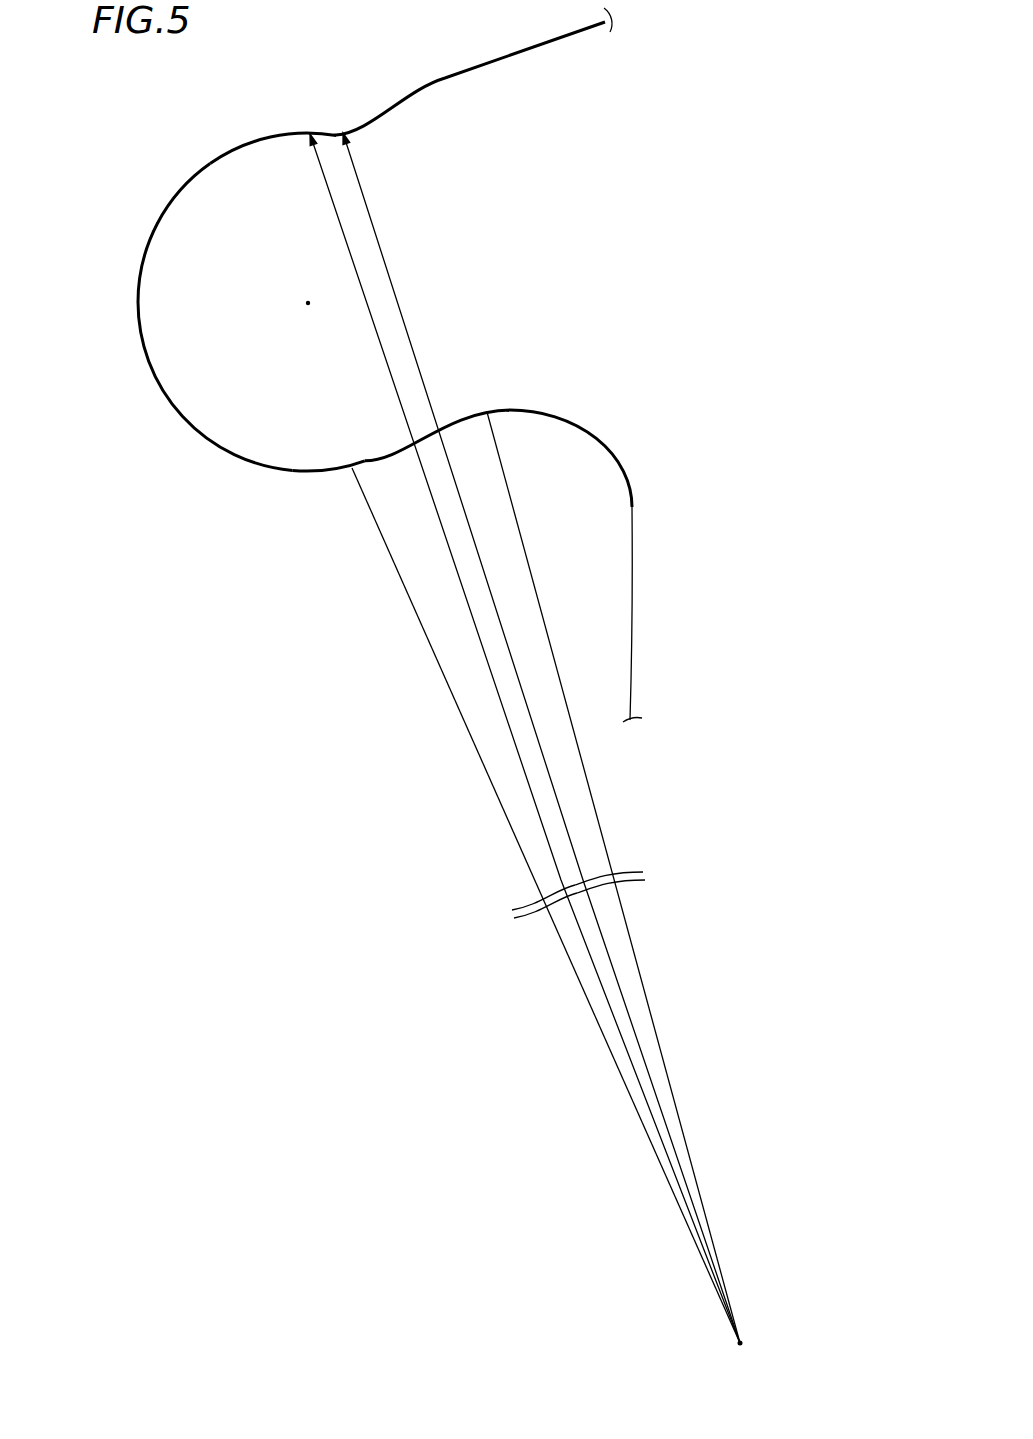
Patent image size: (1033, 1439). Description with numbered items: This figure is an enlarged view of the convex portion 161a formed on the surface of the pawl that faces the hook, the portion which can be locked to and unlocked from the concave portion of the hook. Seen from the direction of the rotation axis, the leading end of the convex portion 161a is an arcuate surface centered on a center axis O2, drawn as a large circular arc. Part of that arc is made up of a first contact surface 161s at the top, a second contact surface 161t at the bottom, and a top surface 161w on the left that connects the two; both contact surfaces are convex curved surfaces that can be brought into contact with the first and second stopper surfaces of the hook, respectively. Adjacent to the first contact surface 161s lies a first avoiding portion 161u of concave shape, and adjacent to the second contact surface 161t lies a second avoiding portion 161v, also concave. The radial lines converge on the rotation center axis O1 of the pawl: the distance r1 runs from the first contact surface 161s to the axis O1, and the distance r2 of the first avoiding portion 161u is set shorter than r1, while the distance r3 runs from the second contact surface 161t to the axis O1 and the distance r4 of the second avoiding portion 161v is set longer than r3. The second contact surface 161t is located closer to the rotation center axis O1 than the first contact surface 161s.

The convex portion 161a is at (205, 198).
The first contact surface 161s is at (325, 137).
The first avoiding portion 161u is at (445, 83).
The second contact surface 161t is at (363, 442).
The second avoiding portion 161v is at (370, 447).
The top surface 161w is at (150, 372).
The rotation center axis O1 is at (757, 1344).
The center axis O2 is at (324, 316).
The distance r1 is at (525, 738).
The distance r2 is at (541, 738).
The distance r3 is at (546, 905).
The distance r4 is at (613, 877).